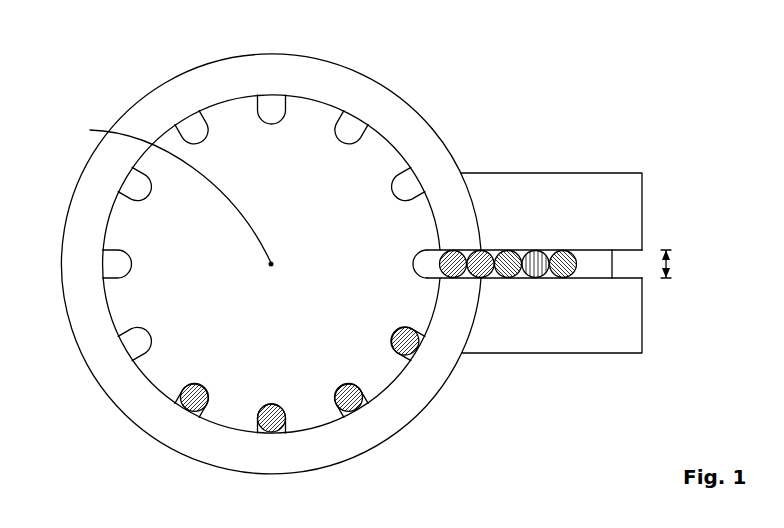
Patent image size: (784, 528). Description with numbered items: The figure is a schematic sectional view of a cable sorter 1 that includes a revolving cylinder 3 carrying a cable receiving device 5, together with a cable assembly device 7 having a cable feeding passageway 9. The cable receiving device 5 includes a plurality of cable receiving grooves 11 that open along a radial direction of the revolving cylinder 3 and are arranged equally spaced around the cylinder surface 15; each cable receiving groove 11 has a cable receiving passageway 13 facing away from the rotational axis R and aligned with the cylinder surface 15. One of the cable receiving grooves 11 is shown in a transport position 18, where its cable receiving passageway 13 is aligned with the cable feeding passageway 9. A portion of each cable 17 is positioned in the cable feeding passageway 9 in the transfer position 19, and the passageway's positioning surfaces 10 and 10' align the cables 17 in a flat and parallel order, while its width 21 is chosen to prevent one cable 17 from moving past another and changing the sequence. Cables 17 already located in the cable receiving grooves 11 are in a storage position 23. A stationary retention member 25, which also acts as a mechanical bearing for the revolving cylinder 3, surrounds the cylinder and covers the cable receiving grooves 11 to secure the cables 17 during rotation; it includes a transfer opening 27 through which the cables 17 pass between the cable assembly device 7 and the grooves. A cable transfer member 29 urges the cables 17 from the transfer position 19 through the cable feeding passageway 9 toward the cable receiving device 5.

The cable sorter 1 is at (104, 50).
The revolving cylinder 3 is at (301, 127).
The cable receiving device 5 is at (365, 370).
The cable assembly device 7 is at (582, 155).
The cable feeding passageway 9 is at (626, 270).
The positioning surface 10 is at (552, 218).
The positioning surface 10' is at (555, 310).
The cable receiving groove 11 is at (267, 103).
The cable receiving passageway 13 is at (198, 118).
The cylinder surface 15 is at (102, 297).
The cable 17 is at (272, 420).
The transport position 18 is at (413, 242).
The transfer position 19 is at (453, 268).
The width 21 is at (670, 263).
The storage position 23 is at (348, 400).
The stationary retention member 25 is at (78, 229).
The transfer opening 27 is at (484, 213).
The cable transfer member 29 is at (597, 257).
The rotational axis R is at (171, 192).